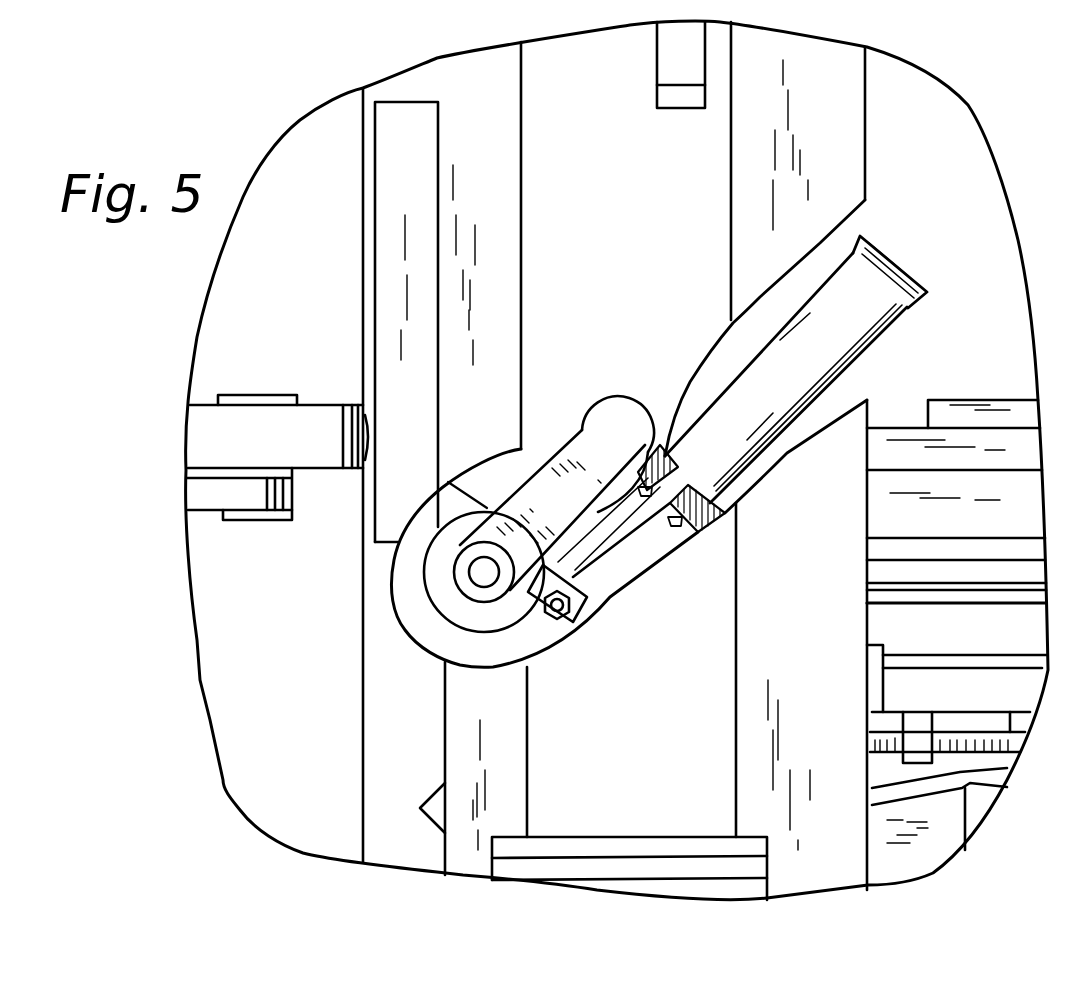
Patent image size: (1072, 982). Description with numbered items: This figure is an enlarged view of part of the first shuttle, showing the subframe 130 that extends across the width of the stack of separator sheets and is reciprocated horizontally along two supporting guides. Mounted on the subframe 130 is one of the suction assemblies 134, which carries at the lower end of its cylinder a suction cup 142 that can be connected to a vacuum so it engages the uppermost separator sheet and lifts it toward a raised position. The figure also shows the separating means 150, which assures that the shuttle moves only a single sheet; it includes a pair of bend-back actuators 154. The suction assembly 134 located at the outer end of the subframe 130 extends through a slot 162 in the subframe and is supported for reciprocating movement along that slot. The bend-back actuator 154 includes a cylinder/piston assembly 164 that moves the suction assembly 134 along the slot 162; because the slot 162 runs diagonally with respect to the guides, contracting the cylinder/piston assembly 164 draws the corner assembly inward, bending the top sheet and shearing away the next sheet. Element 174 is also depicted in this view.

The subframe 130 is at (658, 247).
The suction assembly 134 is at (427, 617).
The suction cup 142 is at (427, 570).
The separating means 150 is at (657, 622).
The bend-back actuator 154 is at (753, 498).
The slot 162 is at (565, 443).
The cylinder/piston assembly 164 is at (826, 350).
The shaft 174 is at (215, 440).